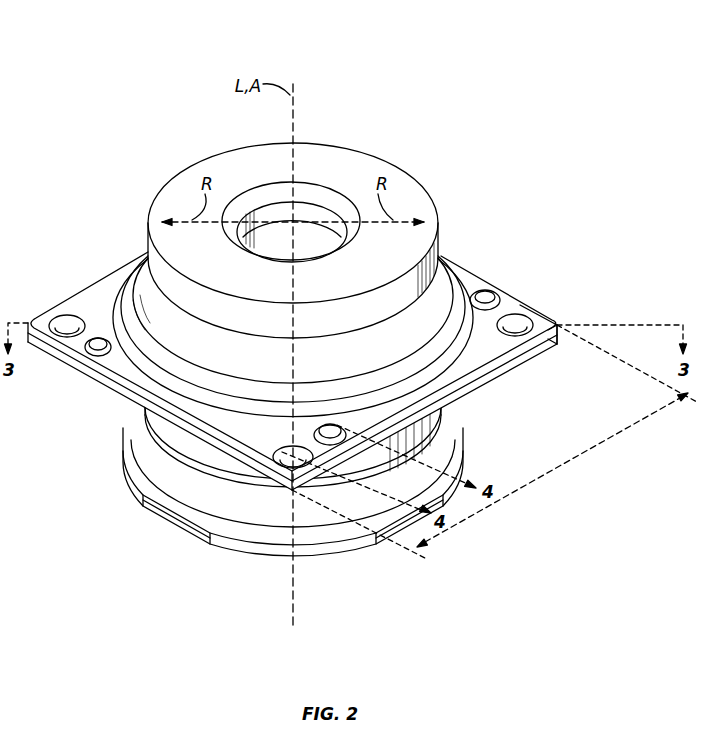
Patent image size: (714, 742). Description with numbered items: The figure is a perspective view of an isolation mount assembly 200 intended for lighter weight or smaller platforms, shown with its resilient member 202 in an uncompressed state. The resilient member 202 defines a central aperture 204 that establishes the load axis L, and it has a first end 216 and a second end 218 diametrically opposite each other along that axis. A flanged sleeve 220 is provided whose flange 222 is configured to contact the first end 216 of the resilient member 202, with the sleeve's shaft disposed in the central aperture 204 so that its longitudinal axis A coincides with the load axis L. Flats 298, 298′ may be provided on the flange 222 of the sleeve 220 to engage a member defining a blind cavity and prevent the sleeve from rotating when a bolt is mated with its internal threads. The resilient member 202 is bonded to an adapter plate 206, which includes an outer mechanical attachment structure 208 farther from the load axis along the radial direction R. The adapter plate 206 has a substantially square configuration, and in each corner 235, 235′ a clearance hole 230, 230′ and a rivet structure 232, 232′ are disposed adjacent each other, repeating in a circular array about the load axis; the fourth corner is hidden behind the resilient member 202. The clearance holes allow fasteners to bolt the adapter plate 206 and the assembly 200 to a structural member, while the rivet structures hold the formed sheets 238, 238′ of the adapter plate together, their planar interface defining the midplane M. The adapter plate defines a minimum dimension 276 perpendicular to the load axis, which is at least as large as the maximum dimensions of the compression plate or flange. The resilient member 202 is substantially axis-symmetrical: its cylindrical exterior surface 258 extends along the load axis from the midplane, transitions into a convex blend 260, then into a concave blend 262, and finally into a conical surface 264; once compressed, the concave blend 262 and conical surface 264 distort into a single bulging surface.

The isolation mount assembly 200 is at (533, 49).
The resilient member 202 is at (412, 164).
The central aperture 204 is at (313, 242).
The adapter plate 206 is at (468, 258).
The outer mechanical attachment structure 208 is at (495, 346).
The first end 216 is at (320, 527).
The second end 218 is at (343, 165).
The flanged sleeve 220 is at (112, 464).
The flange 222 is at (147, 480).
The clearance hole 230 is at (292, 447).
The clearance hole 230′ is at (517, 323).
The rivet structure 232 is at (330, 425).
The rivet structure 232′ is at (487, 297).
The corner 235 is at (290, 489).
The corner 235′ is at (557, 325).
The formed sheet 238 is at (552, 350).
The formed sheet 238′ is at (562, 326).
The cylindrical exterior surface 258 is at (422, 375).
The convex blend 260 is at (428, 353).
The concave blend 262 is at (128, 524).
The conical surface 264 is at (293, 280).
The minimum dimension 276 is at (553, 472).
The flats 298 is at (173, 520).
The flats 298′ is at (380, 548).